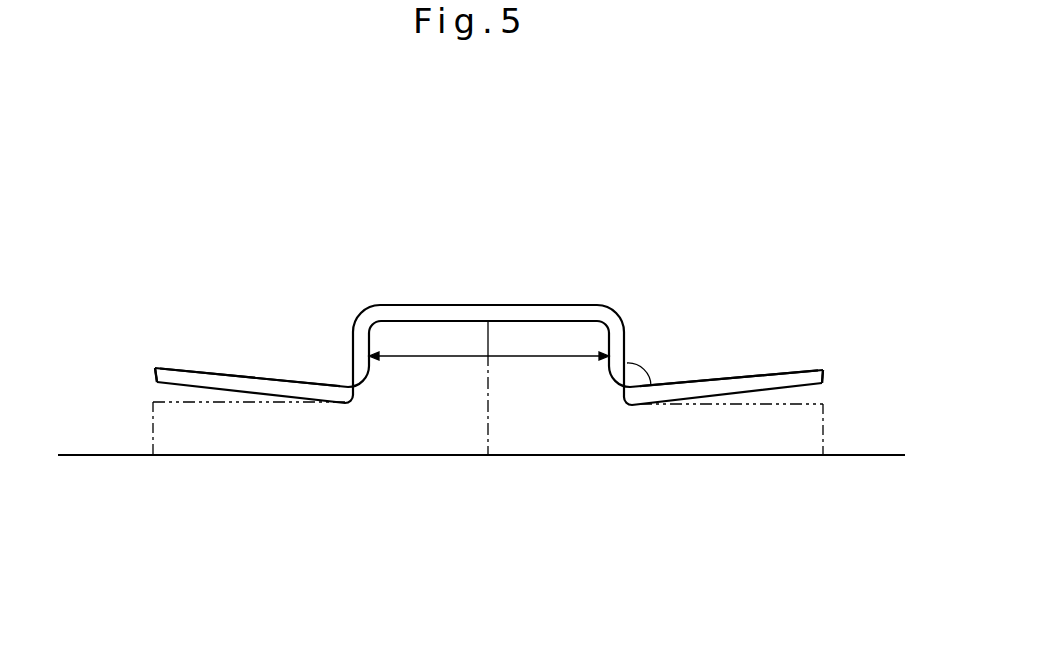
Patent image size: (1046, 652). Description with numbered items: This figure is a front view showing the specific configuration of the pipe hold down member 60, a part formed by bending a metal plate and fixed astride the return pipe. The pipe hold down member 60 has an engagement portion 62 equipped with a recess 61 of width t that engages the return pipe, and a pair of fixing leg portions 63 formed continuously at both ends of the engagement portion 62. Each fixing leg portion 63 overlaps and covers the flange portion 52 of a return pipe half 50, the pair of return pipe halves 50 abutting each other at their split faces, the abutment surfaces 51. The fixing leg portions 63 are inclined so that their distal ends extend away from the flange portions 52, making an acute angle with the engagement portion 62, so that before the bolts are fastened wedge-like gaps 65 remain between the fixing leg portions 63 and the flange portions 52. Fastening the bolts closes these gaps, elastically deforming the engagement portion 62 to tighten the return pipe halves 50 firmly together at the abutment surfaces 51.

The return pipe half 50 is at (422, 433).
The abutment surface 51 is at (488, 415).
The flange portion 52 is at (153, 425).
The pipe hold down member 60 is at (427, 297).
The recess 61 is at (578, 324).
The engagement portion 62 is at (517, 306).
The fixing leg portion 63 is at (247, 377).
The wedge-like gap 65 is at (158, 390).